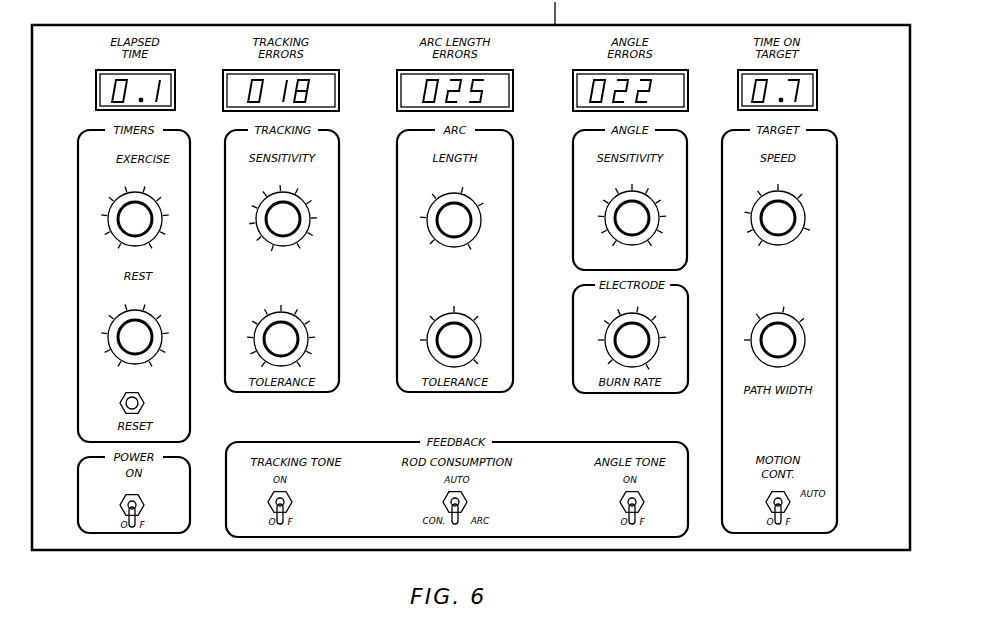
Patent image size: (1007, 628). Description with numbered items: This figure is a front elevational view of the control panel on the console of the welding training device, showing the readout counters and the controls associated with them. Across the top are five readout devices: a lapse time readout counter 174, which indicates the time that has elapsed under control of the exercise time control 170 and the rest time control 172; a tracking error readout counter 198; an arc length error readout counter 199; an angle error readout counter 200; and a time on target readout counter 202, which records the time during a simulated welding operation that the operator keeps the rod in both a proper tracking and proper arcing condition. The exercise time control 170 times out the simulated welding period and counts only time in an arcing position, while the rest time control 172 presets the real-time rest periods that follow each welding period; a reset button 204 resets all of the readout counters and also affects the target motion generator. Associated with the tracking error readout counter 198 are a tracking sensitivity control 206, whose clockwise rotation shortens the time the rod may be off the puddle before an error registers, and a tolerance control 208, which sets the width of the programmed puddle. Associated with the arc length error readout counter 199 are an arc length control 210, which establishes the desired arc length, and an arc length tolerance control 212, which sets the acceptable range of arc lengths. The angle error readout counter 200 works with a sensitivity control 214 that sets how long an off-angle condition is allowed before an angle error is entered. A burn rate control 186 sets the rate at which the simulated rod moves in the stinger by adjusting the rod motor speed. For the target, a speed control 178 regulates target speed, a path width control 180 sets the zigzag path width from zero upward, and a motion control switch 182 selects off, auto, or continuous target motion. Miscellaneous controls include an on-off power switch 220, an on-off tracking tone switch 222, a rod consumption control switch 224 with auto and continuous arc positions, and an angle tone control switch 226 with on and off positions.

The exercise time control 170 is at (133, 219).
The rest time control 172 is at (131, 337).
The lapse time readout counter 174 is at (88, 90).
The target speed control 178 is at (784, 218).
The path width control 180 is at (784, 345).
The motion control switch 182 is at (785, 502).
The burn rate control 186 is at (640, 345).
The tracking error readout counter 198 is at (343, 78).
The arc length error readout counter 199 is at (517, 78).
The angle error readout counter 200 is at (692, 78).
The time on target readout counter 202 is at (822, 84).
The reset button 204 is at (120, 403).
The tracking sensitivity control 206 is at (287, 214).
The tracking tolerance control 208 is at (287, 337).
The arc length control 210 is at (460, 226).
The arc length tolerance control 212 is at (460, 340).
The angle sensitivity control 214 is at (625, 213).
The power switch 220 is at (122, 515).
The tracking tone switch 222 is at (288, 512).
The rod consumption control switch 224 is at (464, 510).
The angle tone control switch 226 is at (640, 510).